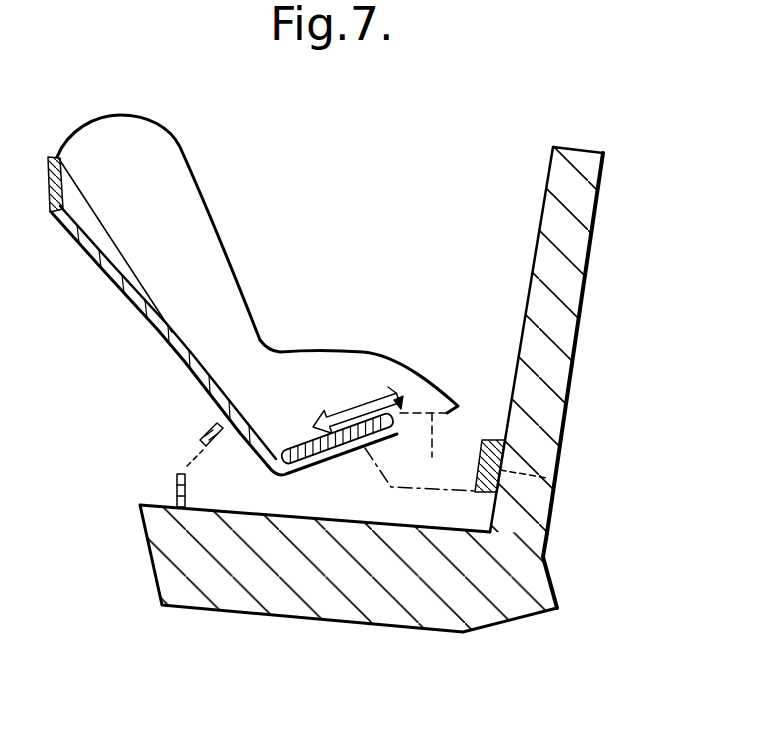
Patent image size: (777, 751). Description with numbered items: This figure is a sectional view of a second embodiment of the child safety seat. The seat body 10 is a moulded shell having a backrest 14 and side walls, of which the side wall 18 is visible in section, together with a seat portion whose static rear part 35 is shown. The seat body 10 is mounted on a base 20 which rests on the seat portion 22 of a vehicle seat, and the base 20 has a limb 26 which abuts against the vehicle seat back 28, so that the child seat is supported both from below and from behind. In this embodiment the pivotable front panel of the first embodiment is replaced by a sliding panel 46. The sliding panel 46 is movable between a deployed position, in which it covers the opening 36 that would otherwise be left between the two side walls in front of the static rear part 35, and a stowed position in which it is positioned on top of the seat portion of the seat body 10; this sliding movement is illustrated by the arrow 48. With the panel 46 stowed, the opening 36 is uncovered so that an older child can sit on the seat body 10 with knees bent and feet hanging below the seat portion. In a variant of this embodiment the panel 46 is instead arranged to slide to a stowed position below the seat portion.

The seat body 10 is at (152, 333).
The backrest 14 is at (120, 267).
The side wall 18 is at (143, 138).
The base 20 is at (187, 465).
The seat portion of vehicle seat 22 is at (307, 588).
The limb 26 is at (550, 480).
The vehicle seat back 28 is at (577, 310).
The static rear part 35 is at (333, 457).
The opening 36 is at (420, 469).
The sliding panel 46 is at (295, 445).
The arrow 48 is at (357, 408).